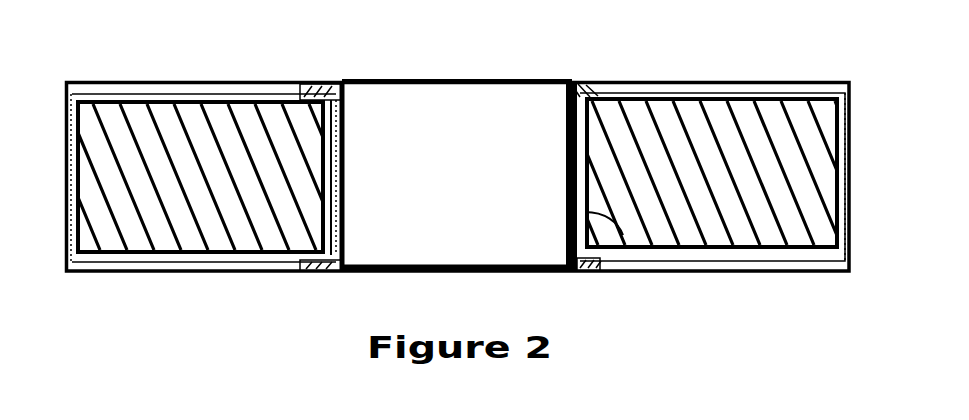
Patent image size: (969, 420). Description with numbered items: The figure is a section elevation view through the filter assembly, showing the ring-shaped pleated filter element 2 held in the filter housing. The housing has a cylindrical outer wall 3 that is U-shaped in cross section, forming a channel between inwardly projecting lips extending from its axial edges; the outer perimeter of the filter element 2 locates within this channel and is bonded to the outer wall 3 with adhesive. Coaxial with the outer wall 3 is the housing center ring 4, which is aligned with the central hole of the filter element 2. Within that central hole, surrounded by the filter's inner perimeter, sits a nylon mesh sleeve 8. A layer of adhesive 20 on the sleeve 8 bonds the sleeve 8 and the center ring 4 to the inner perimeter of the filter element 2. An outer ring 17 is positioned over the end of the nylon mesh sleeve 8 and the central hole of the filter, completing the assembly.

The ring-shaped pleated filter element 2 is at (748, 127).
The cylindrical outer wall 3 is at (852, 163).
The center ring 4 is at (605, 273).
The nylon mesh sleeve 8 is at (567, 183).
The outer ring 17 is at (312, 82).
The layer of adhesive 20 is at (347, 153).